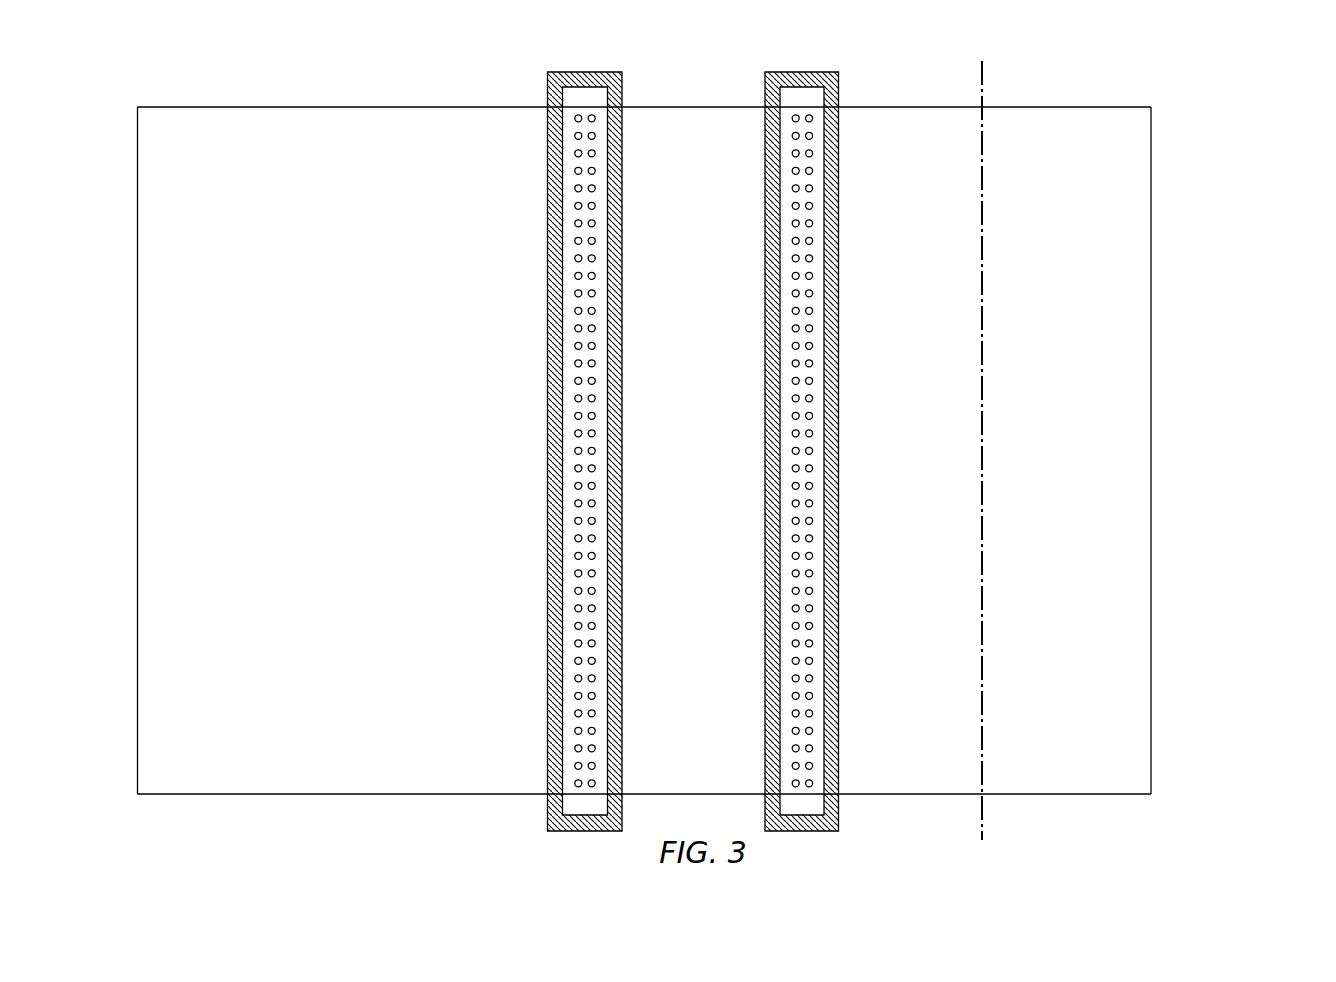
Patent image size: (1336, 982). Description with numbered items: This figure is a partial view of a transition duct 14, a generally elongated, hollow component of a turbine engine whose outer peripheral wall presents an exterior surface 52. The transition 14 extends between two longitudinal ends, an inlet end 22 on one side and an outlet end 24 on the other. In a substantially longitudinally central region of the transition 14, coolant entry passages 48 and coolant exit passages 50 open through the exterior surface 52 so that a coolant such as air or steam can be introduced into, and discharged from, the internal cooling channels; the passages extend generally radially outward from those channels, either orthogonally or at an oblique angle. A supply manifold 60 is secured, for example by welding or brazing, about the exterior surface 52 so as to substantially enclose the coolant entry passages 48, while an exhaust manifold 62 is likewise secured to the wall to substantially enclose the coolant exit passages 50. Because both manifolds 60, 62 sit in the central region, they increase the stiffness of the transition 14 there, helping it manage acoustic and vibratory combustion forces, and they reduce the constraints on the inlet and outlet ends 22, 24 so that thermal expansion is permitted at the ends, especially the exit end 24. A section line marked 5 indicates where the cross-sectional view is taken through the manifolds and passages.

The transition duct 14 is at (707, 420).
The inlet end 22 is at (137, 223).
The outlet end 24 is at (1151, 260).
The exterior surface 52 is at (256, 160).
The exhaust manifold 62 is at (581, 460).
The supply manifold 60 is at (846, 457).
The coolant exit passages 50 is at (592, 787).
The coolant entry passages 48 is at (810, 787).
The section line 5- 5 is at (1026, 840).